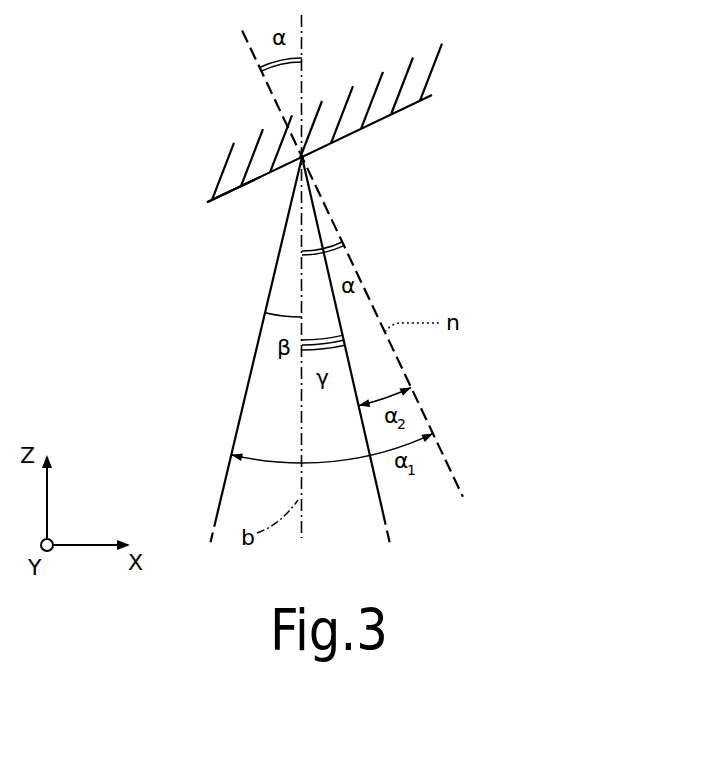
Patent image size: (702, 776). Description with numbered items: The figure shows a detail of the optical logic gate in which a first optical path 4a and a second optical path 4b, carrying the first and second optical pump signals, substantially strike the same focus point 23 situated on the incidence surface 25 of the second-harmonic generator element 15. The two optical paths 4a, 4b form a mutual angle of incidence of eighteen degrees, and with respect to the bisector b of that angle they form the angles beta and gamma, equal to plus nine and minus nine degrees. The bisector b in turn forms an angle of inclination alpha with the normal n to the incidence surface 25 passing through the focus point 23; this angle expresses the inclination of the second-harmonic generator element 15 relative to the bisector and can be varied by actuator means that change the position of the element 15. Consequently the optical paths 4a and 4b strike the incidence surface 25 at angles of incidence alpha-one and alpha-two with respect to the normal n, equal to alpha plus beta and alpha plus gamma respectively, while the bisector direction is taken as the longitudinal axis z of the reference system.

The second-harmonic generator element 15 is at (398, 115).
The focus point 23 is at (310, 165).
The incidence surface 25 is at (235, 203).
The first optical path 4a is at (230, 438).
The second optical path 4b is at (380, 477).